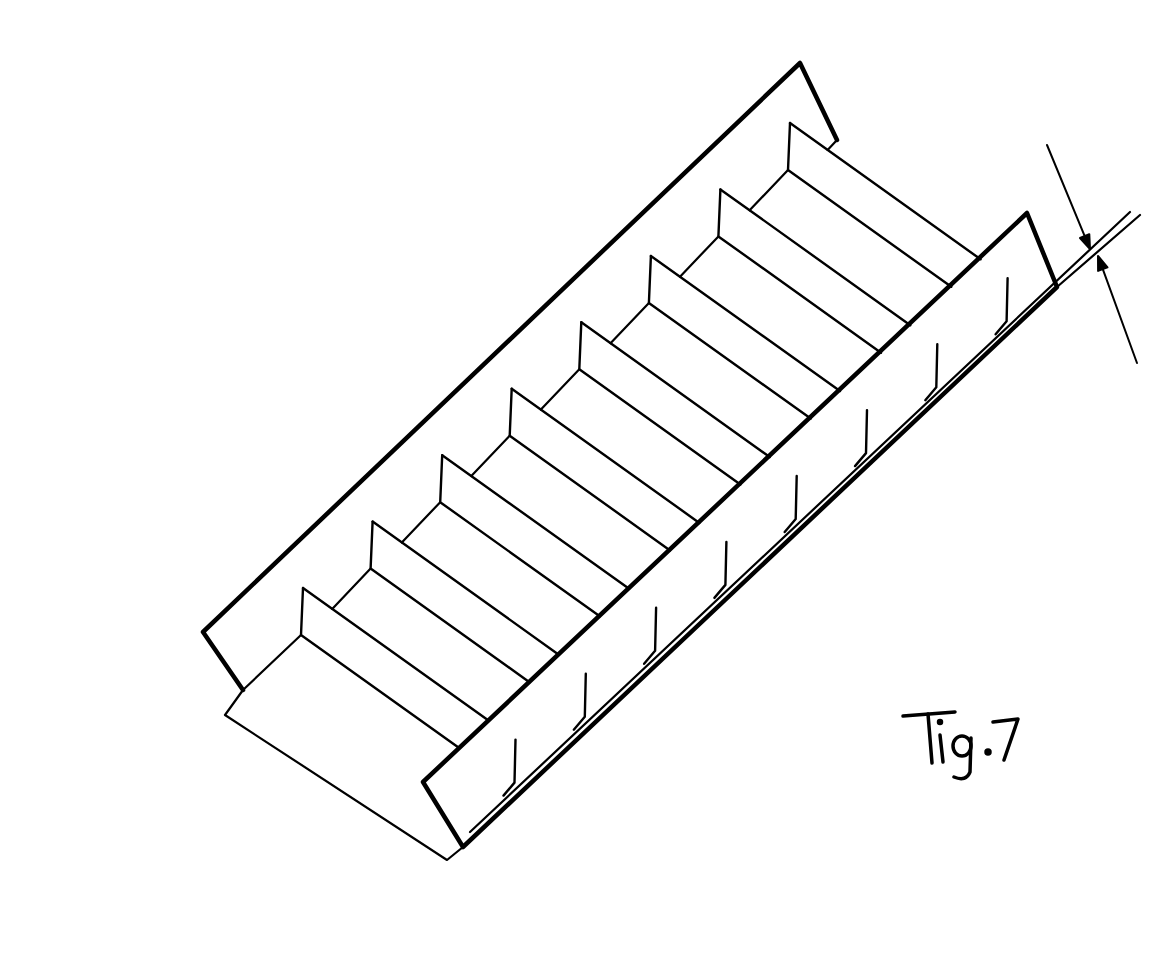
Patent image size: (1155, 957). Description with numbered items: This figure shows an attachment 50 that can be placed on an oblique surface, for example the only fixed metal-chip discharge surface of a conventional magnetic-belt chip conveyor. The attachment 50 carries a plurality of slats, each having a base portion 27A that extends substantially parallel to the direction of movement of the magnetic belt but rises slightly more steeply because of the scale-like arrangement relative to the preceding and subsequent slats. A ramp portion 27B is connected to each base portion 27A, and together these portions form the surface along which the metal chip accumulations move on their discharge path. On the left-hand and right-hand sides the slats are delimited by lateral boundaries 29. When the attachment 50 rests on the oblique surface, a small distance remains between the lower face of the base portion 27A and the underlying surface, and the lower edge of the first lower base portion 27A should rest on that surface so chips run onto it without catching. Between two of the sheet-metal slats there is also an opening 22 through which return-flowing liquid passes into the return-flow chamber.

The attachment 50 is at (382, 118).
The base portion 27A is at (621, 427).
The ramp portion 27B is at (512, 522).
The lateral boundaries 29 is at (561, 619).
The opening 22 is at (715, 603).